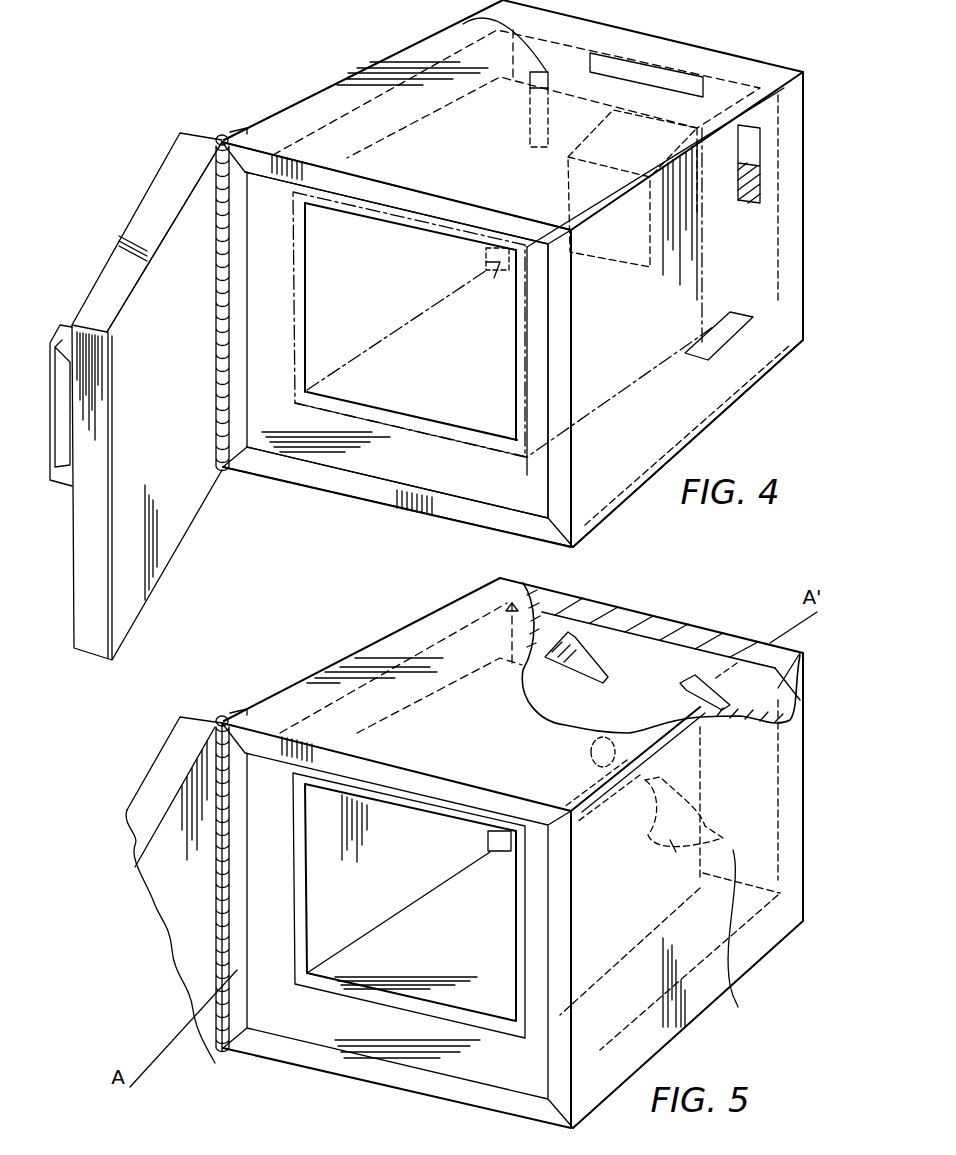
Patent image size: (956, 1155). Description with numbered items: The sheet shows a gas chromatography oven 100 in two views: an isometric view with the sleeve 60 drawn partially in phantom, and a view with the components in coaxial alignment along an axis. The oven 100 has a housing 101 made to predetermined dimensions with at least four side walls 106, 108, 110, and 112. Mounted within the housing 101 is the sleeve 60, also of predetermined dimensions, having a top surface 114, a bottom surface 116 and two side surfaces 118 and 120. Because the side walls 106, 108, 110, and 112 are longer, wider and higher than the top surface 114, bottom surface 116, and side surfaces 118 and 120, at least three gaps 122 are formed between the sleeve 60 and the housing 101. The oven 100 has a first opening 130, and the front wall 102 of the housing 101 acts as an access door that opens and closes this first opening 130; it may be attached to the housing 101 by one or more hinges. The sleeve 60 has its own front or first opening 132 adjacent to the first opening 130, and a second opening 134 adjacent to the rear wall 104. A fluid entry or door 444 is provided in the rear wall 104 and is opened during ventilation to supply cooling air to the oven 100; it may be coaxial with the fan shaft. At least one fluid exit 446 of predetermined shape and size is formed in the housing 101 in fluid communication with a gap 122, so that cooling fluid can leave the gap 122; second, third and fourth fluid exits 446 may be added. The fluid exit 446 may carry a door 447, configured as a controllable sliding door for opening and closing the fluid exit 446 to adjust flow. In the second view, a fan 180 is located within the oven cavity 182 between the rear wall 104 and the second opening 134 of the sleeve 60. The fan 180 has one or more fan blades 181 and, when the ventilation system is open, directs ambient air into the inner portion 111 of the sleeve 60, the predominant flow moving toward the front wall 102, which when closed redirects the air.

In FIG. 4, the sleeve 60 is at (415, 420).
In FIG. 5, the sleeve 60 is at (300, 863).
In FIG. 5, the oven 100 is at (192, 1018).
In FIG. 4, the housing 101 is at (322, 90).
In FIG. 4, the front wall 102 is at (163, 522).
In FIG. 5, the front wall 102 is at (163, 780).
In FIG. 4, the rear wall 104 is at (762, 115).
In FIG. 5, the rear wall 104 is at (792, 833).
In FIG. 4, the side wall 106 is at (233, 230).
In FIG. 4, the side wall 108 is at (562, 465).
In FIG. 4, the side wall 110 is at (390, 483).
In FIG. 5, the inner portion 111 is at (410, 947).
In FIG. 4, the side wall 112 is at (408, 200).
In FIG. 4, the top surface 114 is at (412, 232).
In FIG. 4, the bottom surface 116 is at (380, 408).
In FIG. 4, the side surface 118 is at (298, 300).
In FIG. 4, the side surface 120 is at (516, 362).
In FIG. 4, the gap 122 is at (308, 140).
In FIG. 4, the first opening 130 is at (470, 510).
In FIG. 4, the first opening 132 is at (468, 438).
In FIG. 4, the second opening 134 is at (483, 270).
In FIG. 5, the second opening 134 is at (503, 850).
In FIG. 5, the fan 180 is at (635, 727).
In FIG. 5, the fan blade 181 is at (680, 820).
In FIG. 5, the oven cavity 182 is at (735, 943).
In FIG. 4, the fluid entry 444 is at (568, 178).
In FIG. 4, the fluid exit 446 is at (463, 24).
In FIG. 4, the door 447 is at (760, 183).